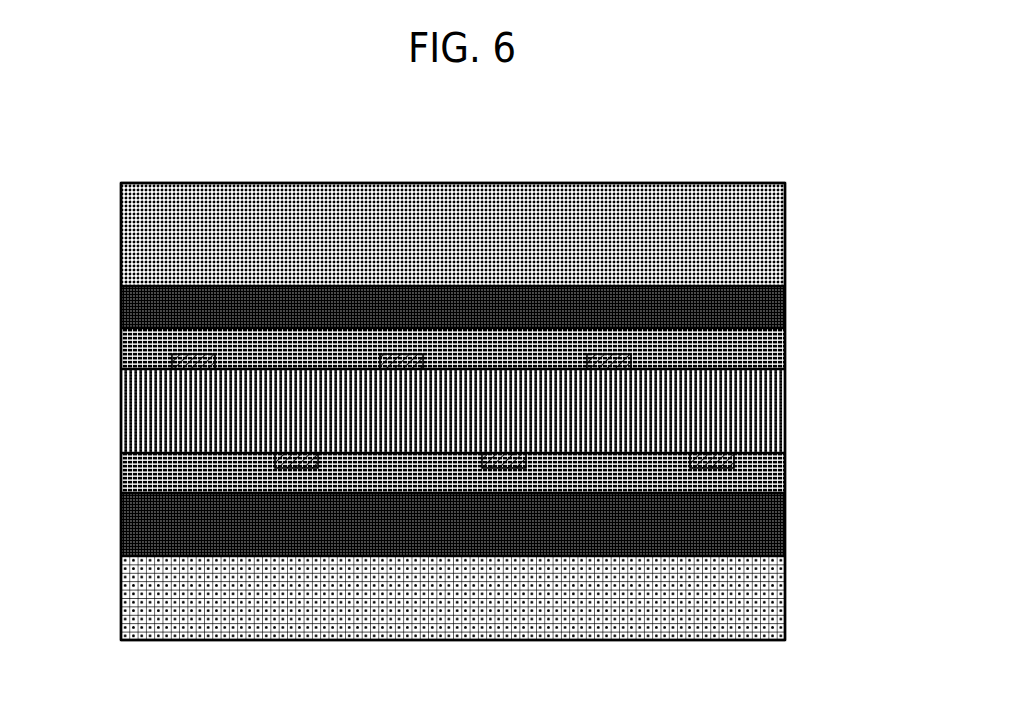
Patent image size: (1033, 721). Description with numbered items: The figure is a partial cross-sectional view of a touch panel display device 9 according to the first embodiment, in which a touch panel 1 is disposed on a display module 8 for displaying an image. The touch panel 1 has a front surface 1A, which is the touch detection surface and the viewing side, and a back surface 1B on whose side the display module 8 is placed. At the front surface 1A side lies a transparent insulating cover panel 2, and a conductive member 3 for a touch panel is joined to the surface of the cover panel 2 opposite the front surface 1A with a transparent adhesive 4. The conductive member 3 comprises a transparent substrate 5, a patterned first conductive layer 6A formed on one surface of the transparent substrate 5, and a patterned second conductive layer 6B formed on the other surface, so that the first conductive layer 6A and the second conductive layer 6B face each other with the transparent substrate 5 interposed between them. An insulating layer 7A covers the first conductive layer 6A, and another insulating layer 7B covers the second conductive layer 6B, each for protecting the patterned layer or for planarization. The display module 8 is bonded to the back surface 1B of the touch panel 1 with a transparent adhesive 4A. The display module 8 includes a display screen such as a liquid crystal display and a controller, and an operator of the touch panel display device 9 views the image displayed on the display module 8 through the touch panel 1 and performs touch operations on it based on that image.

The touch panel 1 is at (90, 175).
The front surface 1A is at (617, 175).
The back surface 1B is at (606, 487).
The cover panel 2 is at (746, 231).
The conductive member for a touch panel 3 is at (800, 345).
The transparent adhesive 4 is at (746, 303).
The transparent adhesive 4A is at (745, 525).
The transparent substrate 5 is at (510, 515).
The first conductive layer 6A is at (185, 347).
The second conductive layer 6B is at (288, 461).
The insulating layer 7A is at (295, 344).
The insulating layer 7B is at (391, 465).
The display module 8 is at (745, 592).
The touch panel display device 9 is at (722, 124).